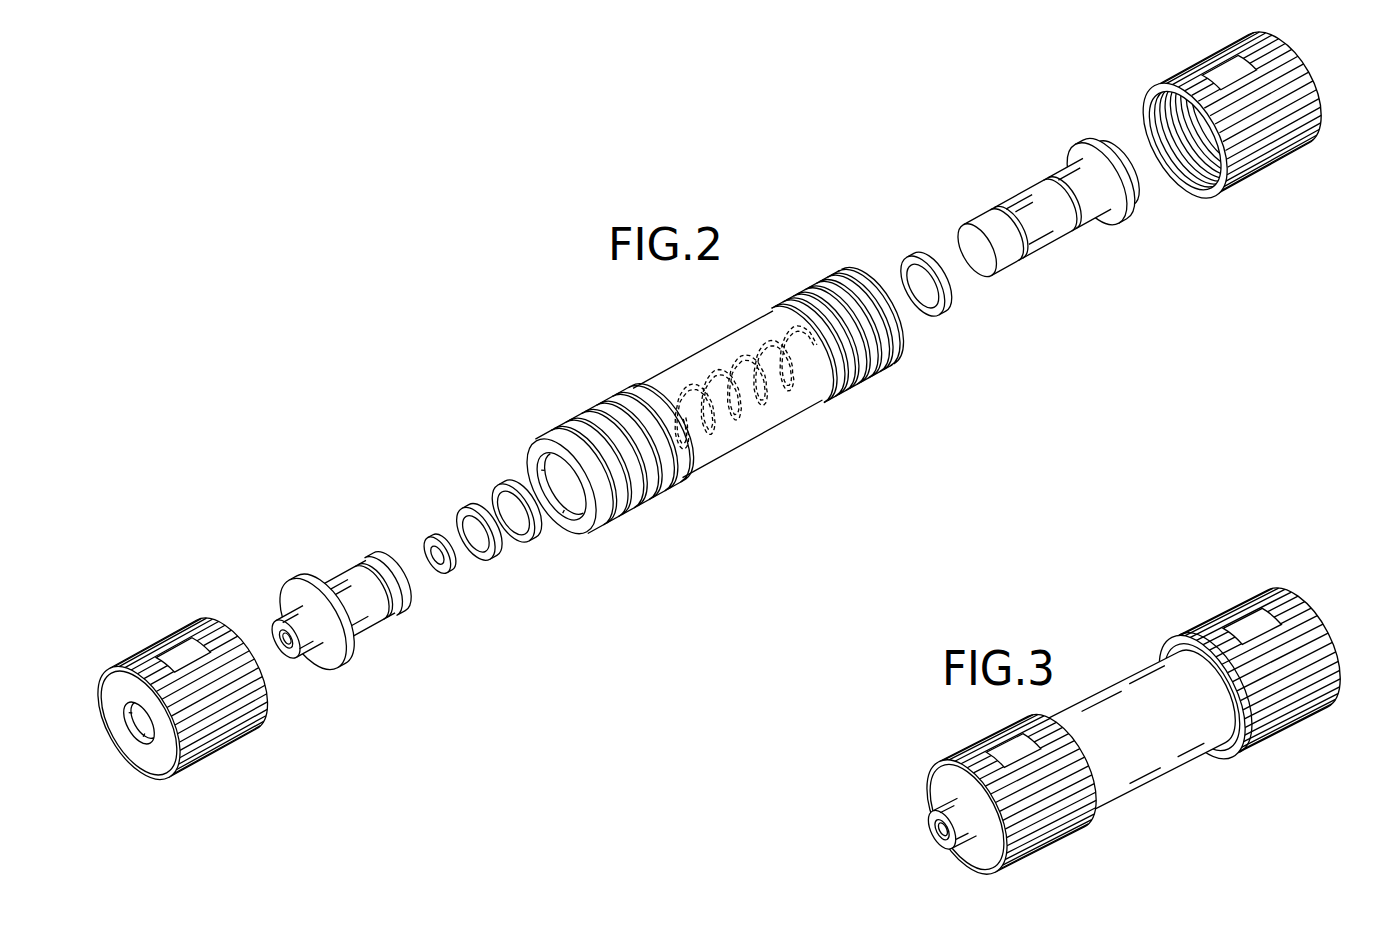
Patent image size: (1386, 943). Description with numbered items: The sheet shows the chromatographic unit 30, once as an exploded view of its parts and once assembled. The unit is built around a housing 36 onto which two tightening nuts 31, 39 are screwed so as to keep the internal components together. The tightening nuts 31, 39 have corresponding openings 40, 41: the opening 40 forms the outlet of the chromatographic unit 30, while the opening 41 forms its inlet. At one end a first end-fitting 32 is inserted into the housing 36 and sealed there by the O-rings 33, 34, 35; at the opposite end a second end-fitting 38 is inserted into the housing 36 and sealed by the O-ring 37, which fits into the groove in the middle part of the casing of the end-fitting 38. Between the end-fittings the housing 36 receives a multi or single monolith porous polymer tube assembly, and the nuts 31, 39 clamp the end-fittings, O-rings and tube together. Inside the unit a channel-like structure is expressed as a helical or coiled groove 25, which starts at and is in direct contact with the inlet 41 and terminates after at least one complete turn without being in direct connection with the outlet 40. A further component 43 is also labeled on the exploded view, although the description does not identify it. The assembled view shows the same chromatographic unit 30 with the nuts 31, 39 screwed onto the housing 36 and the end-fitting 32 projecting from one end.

In FIG. 2, the helical or coiled groove 25 is at (652, 383).
In FIG. 3, the chromatographic unit 30 is at (1138, 690).
In FIG. 2, the tightening nut 31 is at (183, 688).
In FIG. 2, the first end-fitting 32 is at (346, 590).
In FIG. 2, the O-ring 33 is at (426, 540).
In FIG. 2, the O-ring 34 is at (466, 512).
In FIG. 2, the O-ring 35 is at (498, 484).
In FIG. 2, the housing 36 is at (715, 401).
In FIG. 2, the O-ring 37 is at (912, 252).
In FIG. 2, the second end-fitting 38 is at (1017, 218).
In FIG. 2, the tightening nut 39 is at (1242, 114).
In FIG. 2, the opening 40 is at (138, 723).
In FIG. 2, the opening 41 is at (1322, 64).
In FIG. 2, the barrel body 43 is at (727, 394).